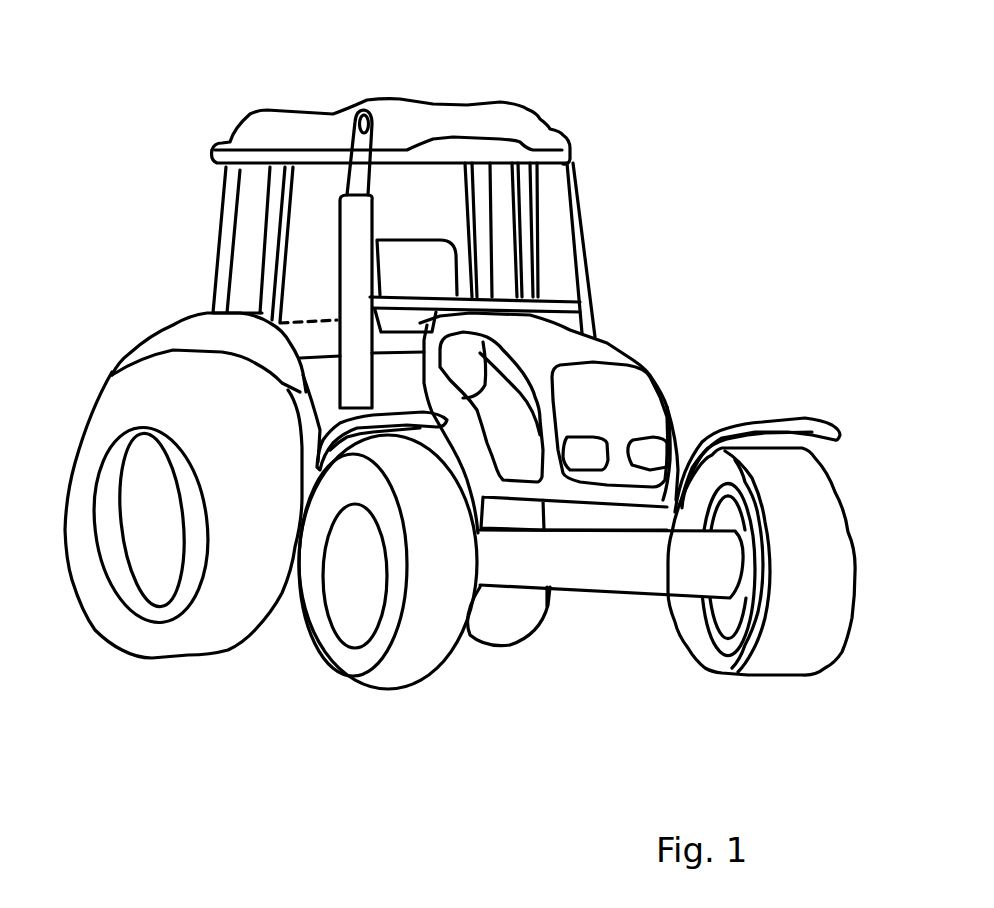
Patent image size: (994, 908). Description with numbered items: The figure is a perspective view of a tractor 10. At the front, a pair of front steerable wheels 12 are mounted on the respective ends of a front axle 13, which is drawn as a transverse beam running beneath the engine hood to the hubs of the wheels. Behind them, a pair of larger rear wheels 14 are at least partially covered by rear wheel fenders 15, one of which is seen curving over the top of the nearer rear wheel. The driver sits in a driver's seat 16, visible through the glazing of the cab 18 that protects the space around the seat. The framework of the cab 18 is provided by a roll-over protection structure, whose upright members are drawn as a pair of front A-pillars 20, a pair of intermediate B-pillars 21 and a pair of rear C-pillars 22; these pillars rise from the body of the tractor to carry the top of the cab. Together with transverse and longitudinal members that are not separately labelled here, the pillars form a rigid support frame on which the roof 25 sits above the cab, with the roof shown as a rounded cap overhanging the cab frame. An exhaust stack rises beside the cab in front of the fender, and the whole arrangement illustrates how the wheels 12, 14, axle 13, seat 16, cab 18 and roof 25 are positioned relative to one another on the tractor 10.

The tractor 10 is at (90, 143).
The front steerable wheels 12 is at (840, 562).
The front axle 13 is at (625, 567).
The rear wheels 14 is at (209, 642).
The rear wheel fenders 15 is at (193, 345).
The driver's seat 16 is at (422, 267).
The cab 18 is at (608, 140).
The front A-pillars 20 is at (583, 213).
The intermediate B-pillars 21 is at (265, 203).
The rear C-pillars 22 is at (223, 213).
The roof 25 is at (295, 108).